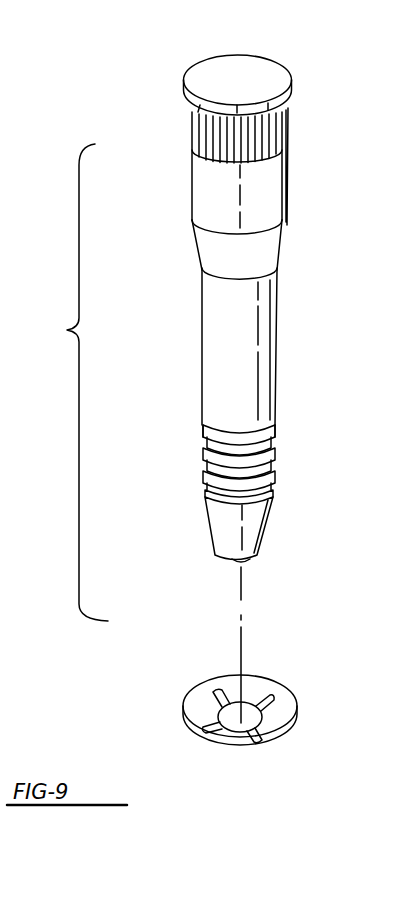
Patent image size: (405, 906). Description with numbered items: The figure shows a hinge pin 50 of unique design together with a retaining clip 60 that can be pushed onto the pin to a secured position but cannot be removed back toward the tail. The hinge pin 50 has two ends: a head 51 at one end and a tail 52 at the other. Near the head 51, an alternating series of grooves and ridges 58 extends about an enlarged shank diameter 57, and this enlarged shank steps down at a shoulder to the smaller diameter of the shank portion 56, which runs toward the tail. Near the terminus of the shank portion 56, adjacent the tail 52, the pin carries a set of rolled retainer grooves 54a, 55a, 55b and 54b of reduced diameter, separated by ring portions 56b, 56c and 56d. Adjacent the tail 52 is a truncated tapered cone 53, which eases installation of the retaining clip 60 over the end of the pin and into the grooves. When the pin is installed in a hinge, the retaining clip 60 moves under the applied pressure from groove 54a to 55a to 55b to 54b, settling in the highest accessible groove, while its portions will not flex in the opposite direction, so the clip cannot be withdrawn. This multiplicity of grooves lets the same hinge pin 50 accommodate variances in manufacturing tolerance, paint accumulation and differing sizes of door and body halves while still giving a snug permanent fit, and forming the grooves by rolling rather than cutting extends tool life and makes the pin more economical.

The hinge pin 50 is at (293, 217).
The head 51 is at (270, 70).
The grooves and ridges 58 is at (277, 127).
The enlarged shank diameter 57 is at (267, 183).
The shank portion 56 is at (272, 325).
The ring portion 56b is at (200, 477).
The ring portion 56c is at (202, 460).
The ring portion 56d is at (202, 433).
The groove 54a is at (277, 493).
The groove 54b is at (275, 430).
The groove 55a is at (275, 473).
The groove 55b is at (275, 452).
The truncated tapered cone 53 is at (270, 537).
The tail 52 is at (253, 560).
The retaining clip 60 is at (290, 695).